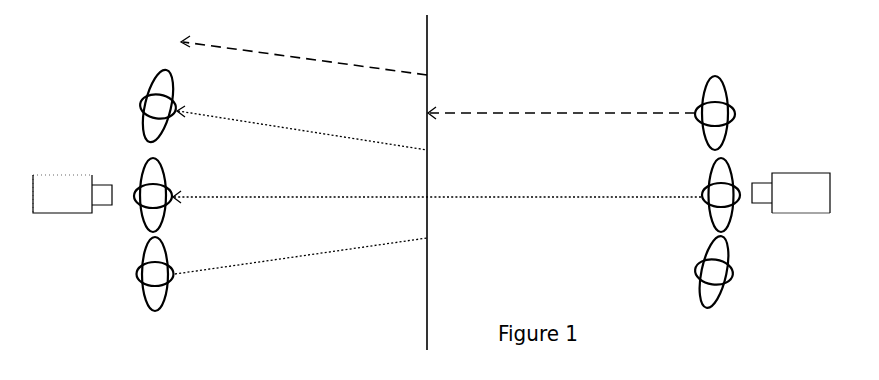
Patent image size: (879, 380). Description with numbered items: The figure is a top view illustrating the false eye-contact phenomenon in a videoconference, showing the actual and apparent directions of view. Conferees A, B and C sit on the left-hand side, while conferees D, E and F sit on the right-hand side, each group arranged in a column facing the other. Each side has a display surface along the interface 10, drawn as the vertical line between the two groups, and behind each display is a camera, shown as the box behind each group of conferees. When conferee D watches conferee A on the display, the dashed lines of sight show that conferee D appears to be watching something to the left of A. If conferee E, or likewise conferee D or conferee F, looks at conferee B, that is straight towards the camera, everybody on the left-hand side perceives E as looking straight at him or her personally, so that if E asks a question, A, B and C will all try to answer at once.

The interface 10 is at (362, 188).
The conferee A is at (158, 106).
The conferee B is at (153, 195).
The conferee C is at (155, 274).
The conferee D is at (715, 113).
The conferee E is at (721, 195).
The conferee F is at (713, 272).